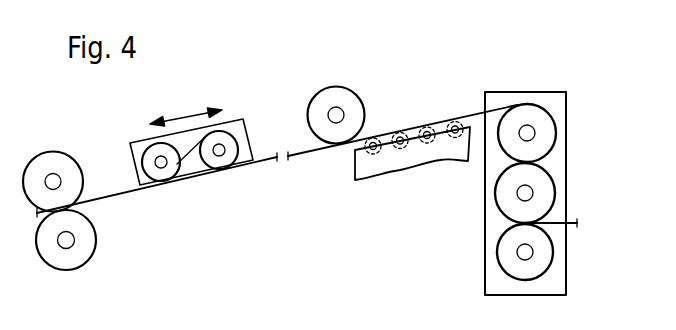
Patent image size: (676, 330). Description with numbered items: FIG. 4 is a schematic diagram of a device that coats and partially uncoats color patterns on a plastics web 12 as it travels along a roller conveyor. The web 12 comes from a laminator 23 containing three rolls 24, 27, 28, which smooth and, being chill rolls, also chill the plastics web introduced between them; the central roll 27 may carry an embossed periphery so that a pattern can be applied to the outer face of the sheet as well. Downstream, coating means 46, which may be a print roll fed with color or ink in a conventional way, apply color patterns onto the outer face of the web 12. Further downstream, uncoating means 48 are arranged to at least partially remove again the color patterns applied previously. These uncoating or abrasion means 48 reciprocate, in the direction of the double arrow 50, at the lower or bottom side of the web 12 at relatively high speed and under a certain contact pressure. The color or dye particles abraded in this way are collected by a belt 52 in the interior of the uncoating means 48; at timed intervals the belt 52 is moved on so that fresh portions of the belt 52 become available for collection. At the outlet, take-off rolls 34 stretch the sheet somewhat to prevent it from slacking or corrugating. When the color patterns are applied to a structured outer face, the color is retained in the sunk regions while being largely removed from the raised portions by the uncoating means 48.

The web 12 is at (121, 193).
The laminator 23 is at (492, 278).
The roll 24 is at (548, 252).
The central roll 27 is at (548, 189).
The roll 28 is at (548, 133).
The take-off rolls 34 is at (55, 152).
The coating means 46 is at (358, 107).
The uncoating means 48 is at (222, 162).
The double arrow 50 is at (187, 116).
The belt 52 is at (195, 165).